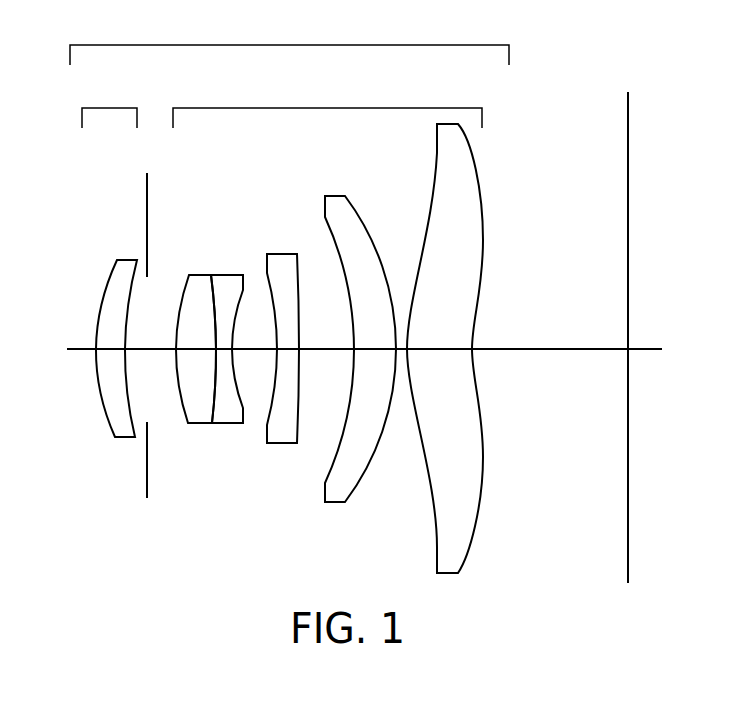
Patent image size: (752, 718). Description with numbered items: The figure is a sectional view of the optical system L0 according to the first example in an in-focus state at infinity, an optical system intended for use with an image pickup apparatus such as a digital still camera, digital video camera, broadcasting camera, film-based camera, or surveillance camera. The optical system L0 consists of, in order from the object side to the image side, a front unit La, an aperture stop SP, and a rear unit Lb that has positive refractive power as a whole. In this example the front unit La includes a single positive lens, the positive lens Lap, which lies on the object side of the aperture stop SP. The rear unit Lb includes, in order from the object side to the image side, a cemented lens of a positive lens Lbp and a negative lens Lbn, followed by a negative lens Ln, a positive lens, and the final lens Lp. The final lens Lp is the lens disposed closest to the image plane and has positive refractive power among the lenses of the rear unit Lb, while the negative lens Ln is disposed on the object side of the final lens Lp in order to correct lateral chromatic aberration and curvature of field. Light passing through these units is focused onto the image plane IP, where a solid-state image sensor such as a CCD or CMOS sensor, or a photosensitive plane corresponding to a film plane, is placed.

The optical system L0 is at (289, 41).
The front unit La is at (109, 105).
The rear unit Lb is at (327, 104).
The aperture stop SP is at (147, 180).
The image plane IP is at (628, 97).
The positive lens Lap is at (115, 434).
The positive lens Lbp is at (197, 423).
The negative lens Lbn is at (228, 423).
The negative lens Ln is at (287, 443).
The final lens Lp is at (437, 568).